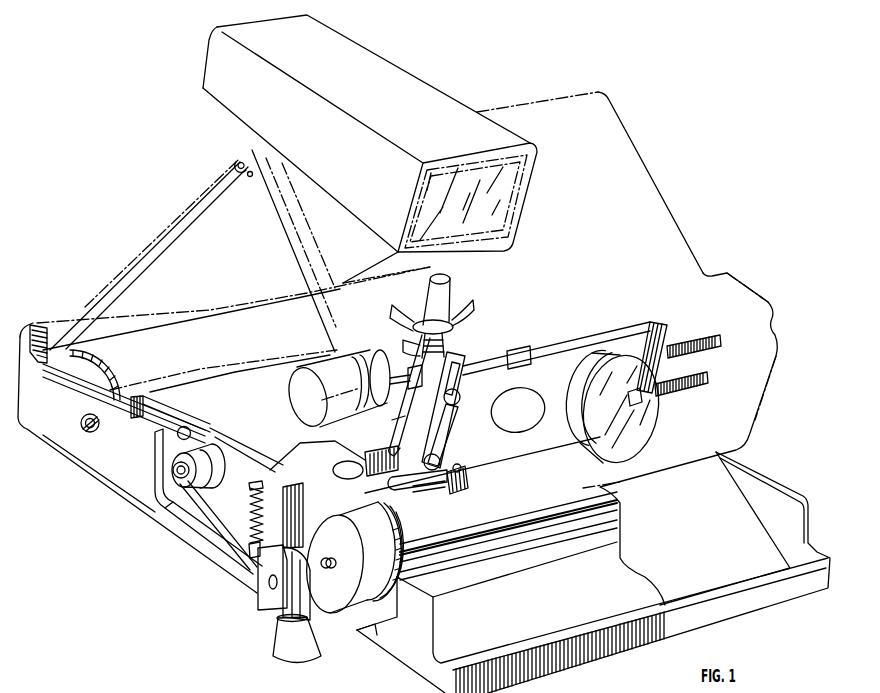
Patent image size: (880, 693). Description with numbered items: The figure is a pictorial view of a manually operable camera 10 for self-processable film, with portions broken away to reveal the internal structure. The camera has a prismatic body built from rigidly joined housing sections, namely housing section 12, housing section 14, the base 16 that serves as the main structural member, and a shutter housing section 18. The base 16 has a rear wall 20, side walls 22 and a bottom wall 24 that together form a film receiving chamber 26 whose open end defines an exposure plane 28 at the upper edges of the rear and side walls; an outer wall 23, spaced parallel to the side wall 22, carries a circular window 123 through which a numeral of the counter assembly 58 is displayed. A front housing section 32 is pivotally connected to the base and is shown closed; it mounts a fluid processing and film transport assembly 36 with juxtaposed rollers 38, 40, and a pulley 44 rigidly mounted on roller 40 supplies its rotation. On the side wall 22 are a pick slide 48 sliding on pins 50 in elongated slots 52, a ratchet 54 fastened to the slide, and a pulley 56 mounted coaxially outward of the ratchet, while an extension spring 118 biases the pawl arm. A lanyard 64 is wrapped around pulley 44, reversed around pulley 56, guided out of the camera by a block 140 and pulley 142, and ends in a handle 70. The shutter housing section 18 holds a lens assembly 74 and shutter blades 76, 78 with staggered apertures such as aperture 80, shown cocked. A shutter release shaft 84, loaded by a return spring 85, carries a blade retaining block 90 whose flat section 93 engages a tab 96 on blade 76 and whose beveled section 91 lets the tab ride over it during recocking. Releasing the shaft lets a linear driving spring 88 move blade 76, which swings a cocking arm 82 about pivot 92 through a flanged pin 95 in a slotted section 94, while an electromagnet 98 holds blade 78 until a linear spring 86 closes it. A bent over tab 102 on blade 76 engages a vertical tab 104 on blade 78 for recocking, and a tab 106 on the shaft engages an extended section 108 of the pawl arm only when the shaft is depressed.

The camera 10 is at (670, 185).
The housing section 12 is at (682, 228).
The housing section 14 is at (142, 249).
The base 16 is at (122, 472).
The shutter housing section 18 is at (770, 377).
The rear wall 20 is at (62, 321).
The side wall 22 is at (135, 382).
The outer wall 23 is at (34, 414).
The bottom wall 24 is at (172, 531).
The film receiving chamber 26 is at (233, 394).
The exposure plane 28 is at (155, 333).
The front housing section 32 is at (591, 661).
The fluid processing and film transport assembly 36 is at (480, 575).
The roller 38 is at (546, 533).
The roller 40 is at (552, 513).
The pulley 44 is at (340, 612).
The pick slide 48 is at (132, 422).
The pins 50 is at (192, 428).
The elongated slots 52 is at (165, 407).
The ratchet 54 is at (213, 487).
The pulley 56 is at (158, 513).
The counter assembly 58 is at (103, 362).
The lanyard 64 is at (213, 551).
The handle 70 is at (276, 640).
The lens assembly 74 is at (660, 406).
The blade 76 is at (527, 454).
The blade 78 is at (652, 320).
The aperture 80 is at (531, 431).
The cocking arm 82 is at (388, 493).
The shutter release shaft 84 is at (447, 291).
The return spring 85 is at (458, 333).
The linear spring 86 is at (705, 338).
The linear driving spring 88 is at (709, 376).
The blade retaining block 90 is at (466, 490).
The beveled section 91 is at (463, 478).
The pivot 92 is at (450, 440).
The flat section 93 is at (440, 495).
The slotted section 94 is at (468, 360).
The flanged pin 95 is at (460, 399).
The tab 96 is at (452, 460).
The electromagnet 98 is at (357, 357).
The bent over tab 102 is at (540, 348).
The vertical tab 104 is at (514, 342).
The tab 106 is at (400, 428).
The extended section 108 is at (377, 453).
The extension spring 118 is at (245, 560).
The circular window 123 is at (81, 426).
The block 140 is at (262, 592).
The pulley 142 is at (283, 607).